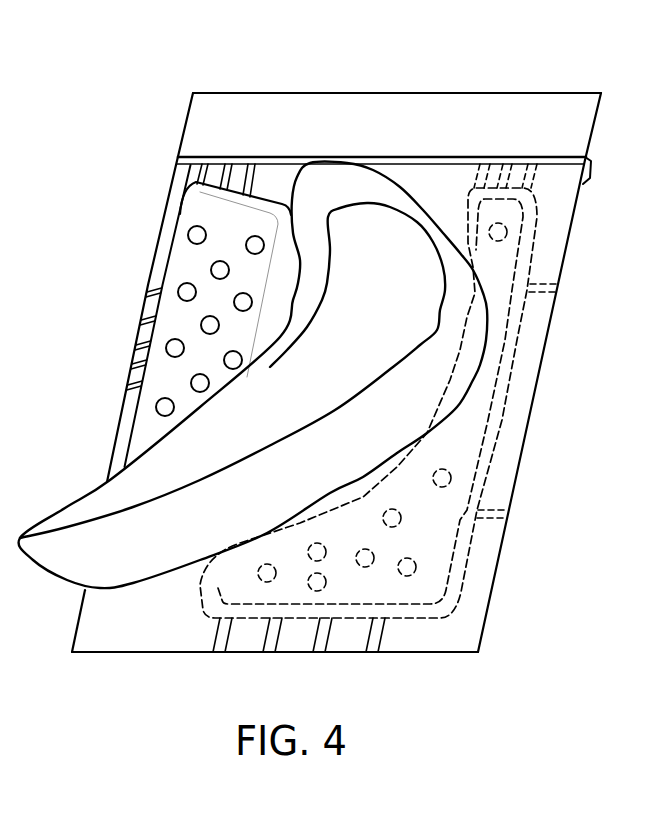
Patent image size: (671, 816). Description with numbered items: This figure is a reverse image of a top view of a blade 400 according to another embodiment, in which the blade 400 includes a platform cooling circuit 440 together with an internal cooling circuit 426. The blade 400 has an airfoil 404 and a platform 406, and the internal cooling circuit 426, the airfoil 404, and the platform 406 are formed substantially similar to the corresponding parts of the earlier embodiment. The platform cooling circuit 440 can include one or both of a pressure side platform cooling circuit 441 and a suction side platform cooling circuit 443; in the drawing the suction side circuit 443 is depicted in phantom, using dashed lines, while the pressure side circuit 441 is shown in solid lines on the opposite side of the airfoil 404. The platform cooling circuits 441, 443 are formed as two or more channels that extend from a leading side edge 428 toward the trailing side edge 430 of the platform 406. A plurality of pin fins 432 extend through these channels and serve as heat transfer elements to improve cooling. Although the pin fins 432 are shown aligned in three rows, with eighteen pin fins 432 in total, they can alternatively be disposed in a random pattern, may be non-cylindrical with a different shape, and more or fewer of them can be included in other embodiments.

The blade 400 is at (452, 103).
The airfoil 404 is at (463, 287).
The platform 406 is at (568, 200).
The internal cooling circuit 426 is at (377, 355).
The leading side edge 428 is at (372, 163).
The trailing side edge 430 is at (350, 652).
The pin fins 432 is at (177, 292).
The platform cooling circuit 440 is at (185, 208).
The pressure side platform cooling circuit 441 is at (161, 242).
The suction side platform cooling circuit 443 is at (518, 373).